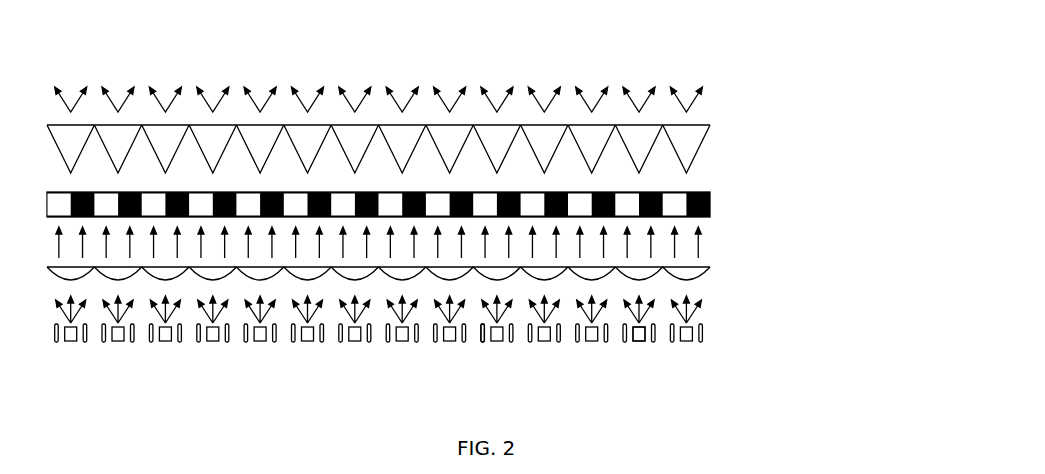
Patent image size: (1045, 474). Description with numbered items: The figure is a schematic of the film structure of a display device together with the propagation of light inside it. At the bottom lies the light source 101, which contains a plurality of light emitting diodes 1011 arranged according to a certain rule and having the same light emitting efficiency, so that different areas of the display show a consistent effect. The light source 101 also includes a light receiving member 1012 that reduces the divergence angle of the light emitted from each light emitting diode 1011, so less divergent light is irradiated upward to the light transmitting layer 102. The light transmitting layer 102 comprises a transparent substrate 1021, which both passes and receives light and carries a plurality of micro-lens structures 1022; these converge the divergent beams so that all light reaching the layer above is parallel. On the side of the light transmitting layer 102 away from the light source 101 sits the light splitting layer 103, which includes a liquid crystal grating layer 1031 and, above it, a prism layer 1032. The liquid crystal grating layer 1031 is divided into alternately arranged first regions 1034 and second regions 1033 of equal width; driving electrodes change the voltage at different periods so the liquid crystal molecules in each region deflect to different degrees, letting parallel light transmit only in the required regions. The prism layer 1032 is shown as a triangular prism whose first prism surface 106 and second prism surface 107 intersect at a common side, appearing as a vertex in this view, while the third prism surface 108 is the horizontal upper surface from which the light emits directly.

The light source 101 is at (705, 330).
The light emitting diode 1011 is at (642, 333).
The light receiving member 1012 is at (482, 333).
The light transmitting layer 102 is at (480, 266).
The transparent substrate 1021 is at (682, 263).
The micro-lens structure 1022 is at (707, 277).
The light splitting layer 103 is at (483, 156).
The liquid crystal grating layer 1031 is at (712, 200).
The prism layer 1032 is at (687, 138).
The second region 1033 is at (463, 187).
The first region 1034 is at (438, 188).
The first prism surface 106 is at (195, 148).
The second prism surface 107 is at (234, 149).
The third prism surface 108 is at (213, 120).